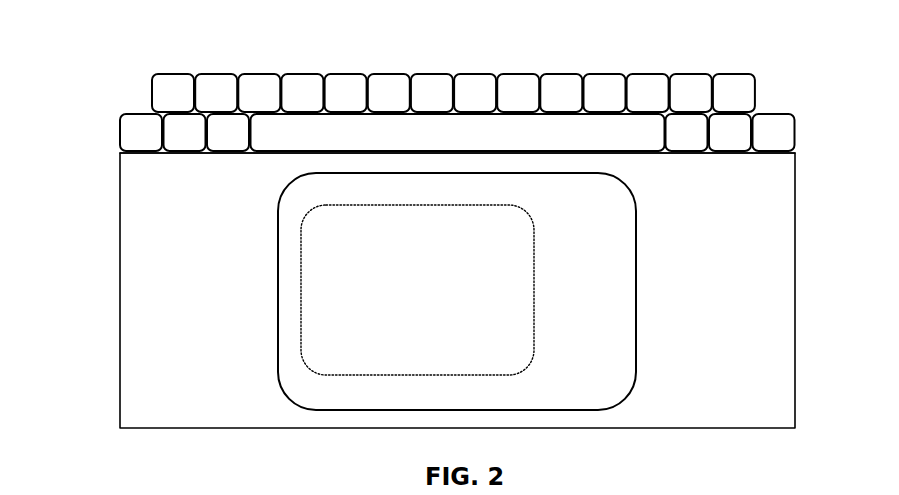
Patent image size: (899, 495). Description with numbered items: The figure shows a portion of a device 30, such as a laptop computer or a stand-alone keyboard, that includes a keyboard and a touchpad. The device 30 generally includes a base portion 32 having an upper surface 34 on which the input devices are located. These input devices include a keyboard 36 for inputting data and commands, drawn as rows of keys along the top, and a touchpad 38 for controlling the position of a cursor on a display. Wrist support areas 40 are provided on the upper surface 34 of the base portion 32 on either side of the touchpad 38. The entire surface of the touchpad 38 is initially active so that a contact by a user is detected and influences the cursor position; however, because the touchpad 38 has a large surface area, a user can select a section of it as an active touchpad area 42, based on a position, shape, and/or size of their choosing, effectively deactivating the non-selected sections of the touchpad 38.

The device 30 is at (88, 62).
The base portion 32 is at (109, 301).
The upper surface 34 is at (137, 203).
The keyboard 36 is at (776, 74).
The touchpad 38 is at (645, 223).
The wrist support areas 40 is at (165, 399).
The active touchpad area 42 is at (544, 247).